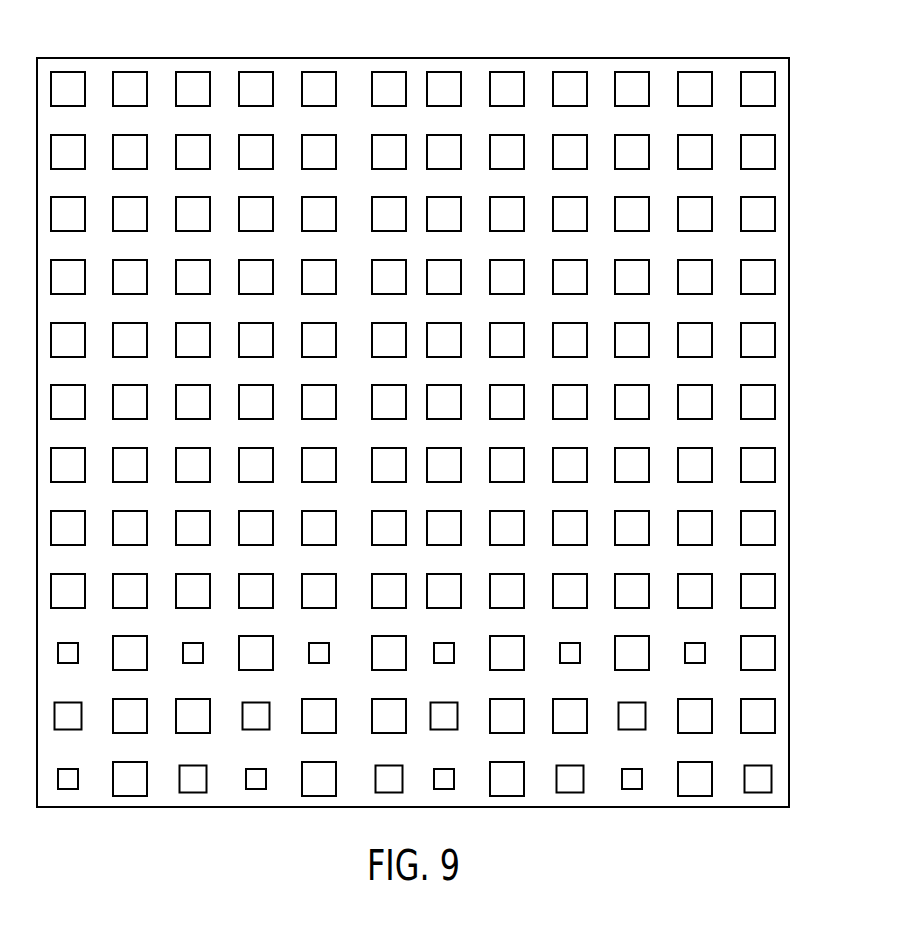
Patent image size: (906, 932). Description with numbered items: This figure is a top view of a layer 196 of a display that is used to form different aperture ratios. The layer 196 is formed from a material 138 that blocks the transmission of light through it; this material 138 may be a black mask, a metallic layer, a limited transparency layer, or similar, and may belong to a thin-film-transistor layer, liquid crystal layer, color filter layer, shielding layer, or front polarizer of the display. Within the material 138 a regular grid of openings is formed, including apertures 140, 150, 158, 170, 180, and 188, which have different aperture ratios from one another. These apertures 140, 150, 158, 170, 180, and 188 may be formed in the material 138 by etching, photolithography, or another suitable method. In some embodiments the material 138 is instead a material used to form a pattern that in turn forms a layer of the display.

The layer 196 is at (144, 30).
The material 138 is at (690, 67).
The aperture 140 is at (698, 197).
The aperture 150 is at (758, 322).
The aperture 158 is at (128, 508).
The aperture 170 is at (63, 768).
The aperture 180 is at (445, 768).
The aperture 188 is at (632, 702).